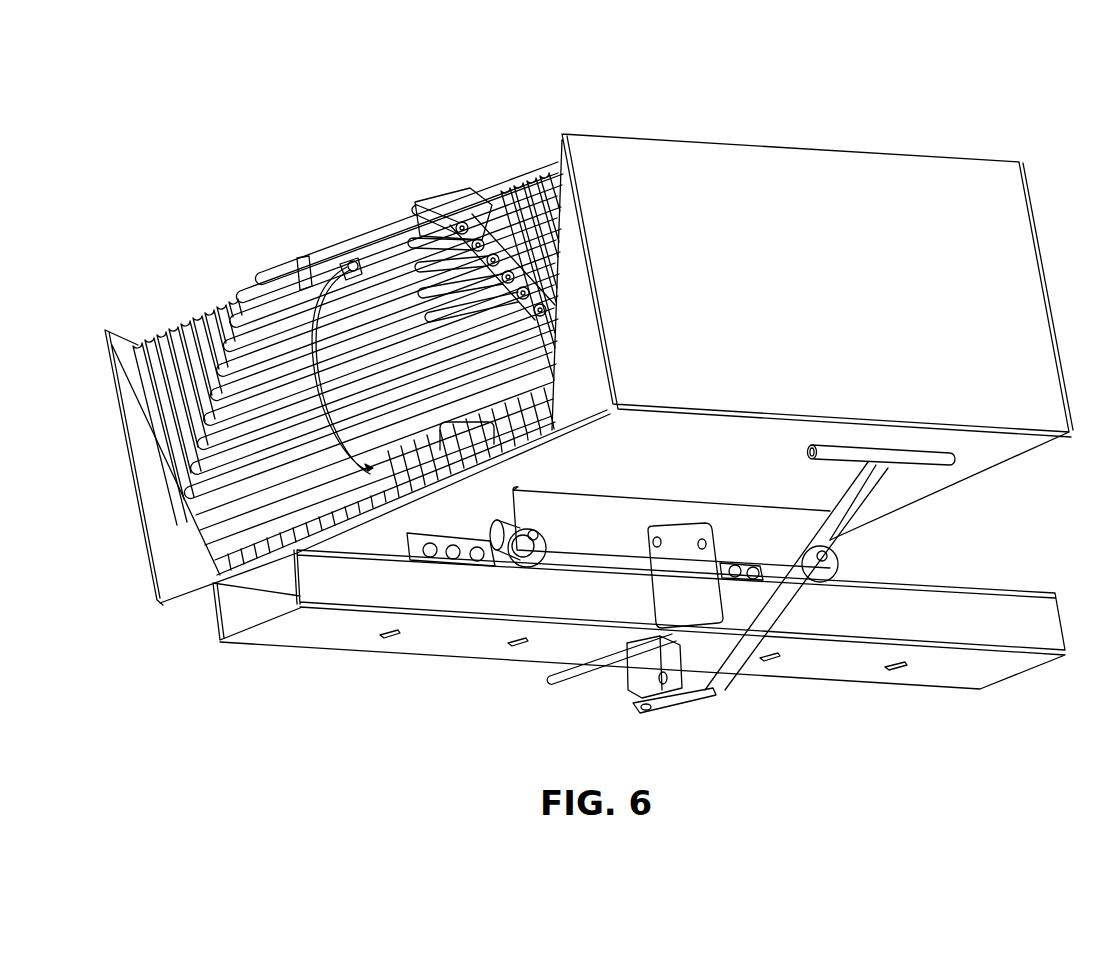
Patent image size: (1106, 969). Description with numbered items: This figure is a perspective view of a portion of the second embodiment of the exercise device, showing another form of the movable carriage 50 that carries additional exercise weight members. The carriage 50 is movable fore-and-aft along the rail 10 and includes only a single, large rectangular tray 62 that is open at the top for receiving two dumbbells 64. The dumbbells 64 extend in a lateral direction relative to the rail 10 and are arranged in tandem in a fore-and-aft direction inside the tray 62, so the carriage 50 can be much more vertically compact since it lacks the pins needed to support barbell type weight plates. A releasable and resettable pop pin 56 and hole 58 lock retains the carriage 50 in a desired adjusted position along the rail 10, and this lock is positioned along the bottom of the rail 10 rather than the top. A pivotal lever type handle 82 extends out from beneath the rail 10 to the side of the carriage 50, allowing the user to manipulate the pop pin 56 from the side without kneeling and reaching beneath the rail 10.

The carriage 50 is at (846, 168).
The dumbbells 64 is at (322, 250).
The tray 62 is at (722, 462).
The lever type handle 82 is at (850, 500).
The rail 10 is at (988, 610).
The hole 58 is at (393, 639).
The pop pin 56 is at (587, 700).